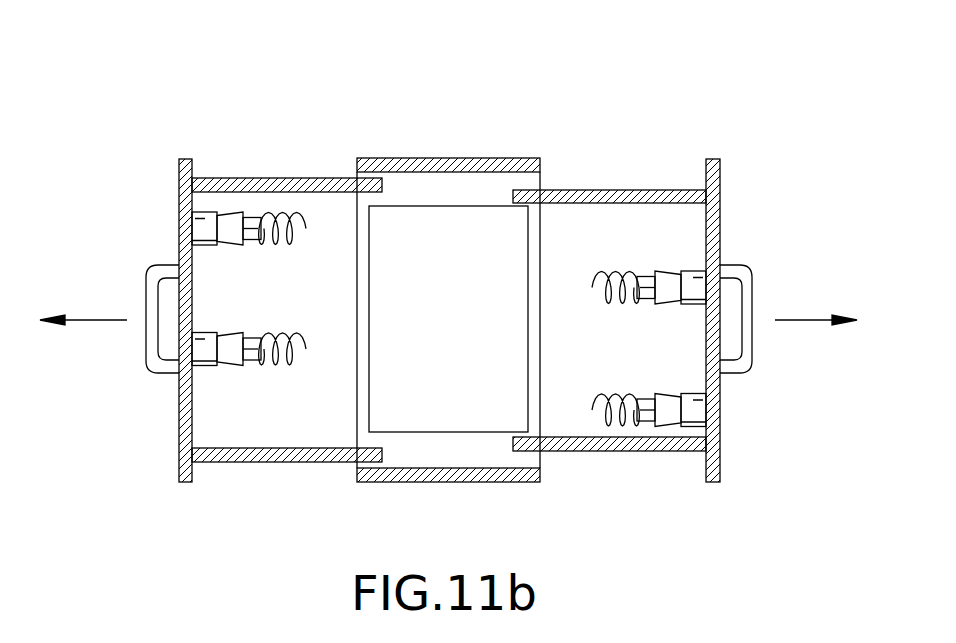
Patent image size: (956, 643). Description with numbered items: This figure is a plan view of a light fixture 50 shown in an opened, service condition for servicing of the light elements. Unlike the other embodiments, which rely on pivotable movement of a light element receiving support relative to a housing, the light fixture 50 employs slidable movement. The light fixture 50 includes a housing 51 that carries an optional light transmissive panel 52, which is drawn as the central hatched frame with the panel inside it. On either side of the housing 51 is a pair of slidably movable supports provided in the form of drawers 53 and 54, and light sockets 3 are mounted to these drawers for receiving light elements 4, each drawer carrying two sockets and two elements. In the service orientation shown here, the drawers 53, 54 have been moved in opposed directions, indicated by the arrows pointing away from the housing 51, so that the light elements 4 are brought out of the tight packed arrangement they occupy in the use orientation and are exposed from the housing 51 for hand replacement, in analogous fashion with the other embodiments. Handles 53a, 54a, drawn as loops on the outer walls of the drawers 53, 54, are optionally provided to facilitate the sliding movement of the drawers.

The light socket 3 is at (202, 217).
The light element 4 is at (290, 248).
The light fixture 50 is at (636, 128).
The housing 51 is at (423, 478).
The light transmissive panel 52 is at (468, 323).
The drawer 53 is at (240, 462).
The handle 53a is at (148, 350).
The drawer 54 is at (617, 443).
The handle 54a is at (742, 360).